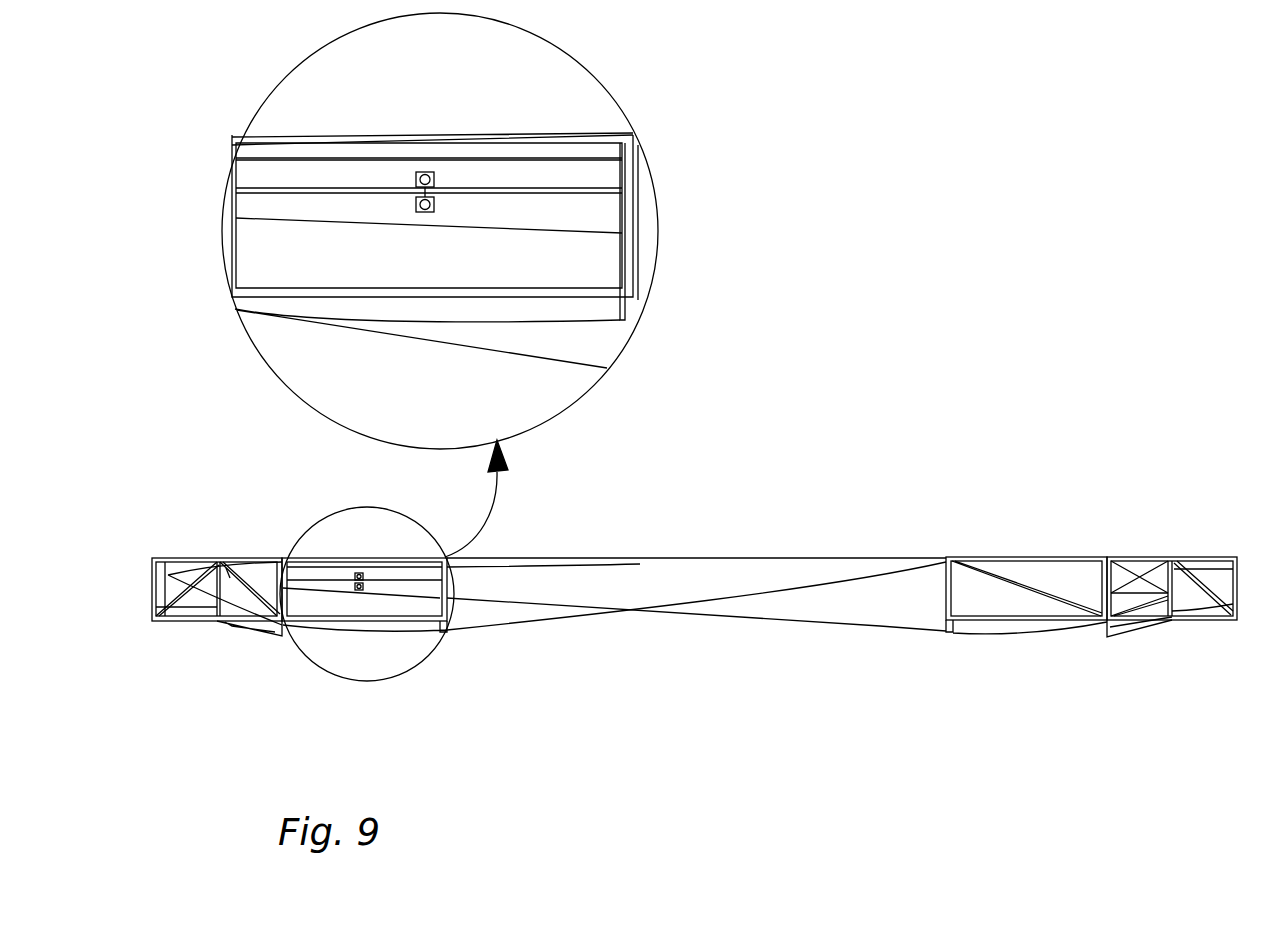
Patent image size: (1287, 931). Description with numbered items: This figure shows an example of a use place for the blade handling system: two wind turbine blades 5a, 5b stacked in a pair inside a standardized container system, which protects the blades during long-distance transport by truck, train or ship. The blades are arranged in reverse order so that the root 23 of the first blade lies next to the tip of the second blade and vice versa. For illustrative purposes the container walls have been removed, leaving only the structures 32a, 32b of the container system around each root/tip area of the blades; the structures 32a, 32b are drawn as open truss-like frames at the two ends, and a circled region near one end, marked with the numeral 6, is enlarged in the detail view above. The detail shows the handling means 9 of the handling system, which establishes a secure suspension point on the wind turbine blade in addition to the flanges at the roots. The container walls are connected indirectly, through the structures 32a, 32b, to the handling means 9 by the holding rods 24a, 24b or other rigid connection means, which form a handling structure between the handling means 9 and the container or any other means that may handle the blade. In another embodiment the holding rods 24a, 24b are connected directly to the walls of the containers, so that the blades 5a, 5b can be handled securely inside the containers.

The root 23 is at (165, 567).
The truss brace 6 is at (228, 577).
The structure of the container system 32a is at (218, 624).
The structure of the container system 32b is at (1012, 558).
The wind turbine blade 5a is at (883, 572).
The wind turbine blade 5b is at (487, 622).
The holding rod 24a is at (343, 192).
The holding rod 24b is at (498, 193).
The handling means 9 is at (436, 172).